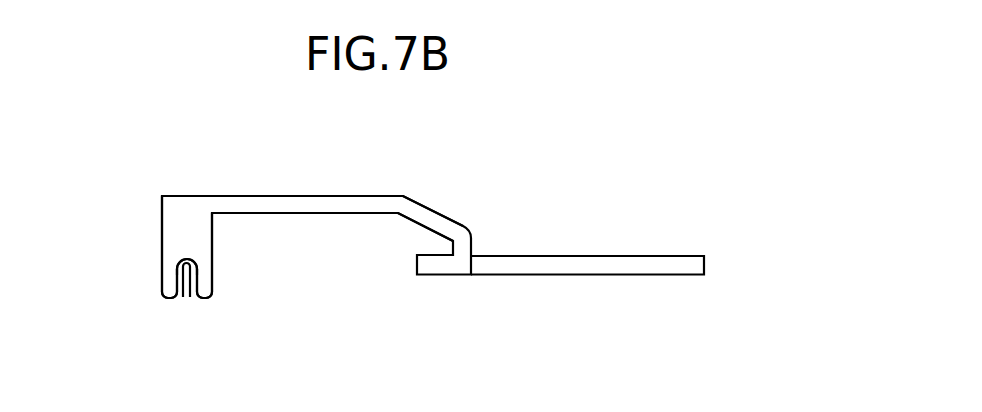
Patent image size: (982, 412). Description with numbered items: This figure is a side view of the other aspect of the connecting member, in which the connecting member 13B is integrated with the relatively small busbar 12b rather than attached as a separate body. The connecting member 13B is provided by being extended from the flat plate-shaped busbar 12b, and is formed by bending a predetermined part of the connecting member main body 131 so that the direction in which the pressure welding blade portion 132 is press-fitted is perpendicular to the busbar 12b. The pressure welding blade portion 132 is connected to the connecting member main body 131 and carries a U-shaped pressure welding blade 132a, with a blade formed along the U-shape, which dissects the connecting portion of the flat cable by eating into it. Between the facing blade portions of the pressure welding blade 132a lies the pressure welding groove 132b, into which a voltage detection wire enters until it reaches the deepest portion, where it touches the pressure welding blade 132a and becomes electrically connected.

The connecting member 13B is at (267, 196).
The busbar 12b is at (544, 211).
The connecting member main body 131 is at (305, 205).
The pressure welding blade portion 132 is at (167, 245).
The pressure welding blade 132a is at (199, 257).
The pressure welding groove 132b is at (185, 285).